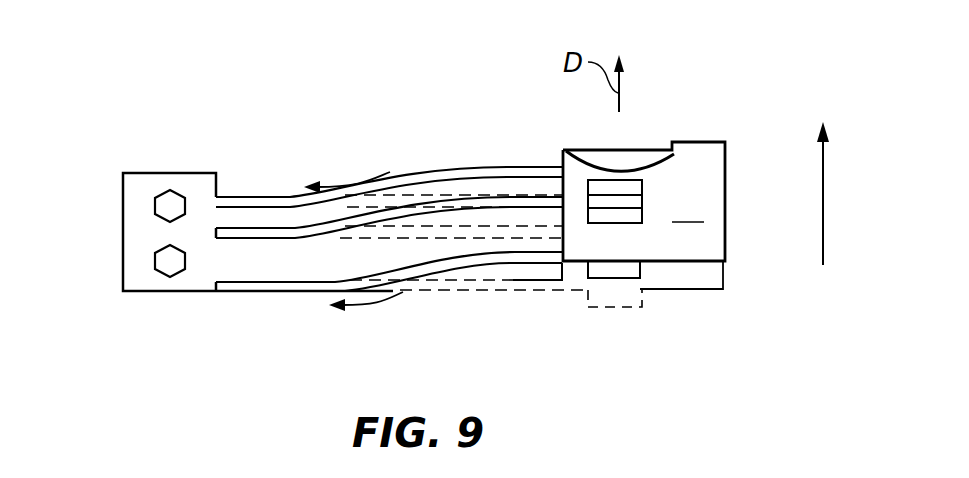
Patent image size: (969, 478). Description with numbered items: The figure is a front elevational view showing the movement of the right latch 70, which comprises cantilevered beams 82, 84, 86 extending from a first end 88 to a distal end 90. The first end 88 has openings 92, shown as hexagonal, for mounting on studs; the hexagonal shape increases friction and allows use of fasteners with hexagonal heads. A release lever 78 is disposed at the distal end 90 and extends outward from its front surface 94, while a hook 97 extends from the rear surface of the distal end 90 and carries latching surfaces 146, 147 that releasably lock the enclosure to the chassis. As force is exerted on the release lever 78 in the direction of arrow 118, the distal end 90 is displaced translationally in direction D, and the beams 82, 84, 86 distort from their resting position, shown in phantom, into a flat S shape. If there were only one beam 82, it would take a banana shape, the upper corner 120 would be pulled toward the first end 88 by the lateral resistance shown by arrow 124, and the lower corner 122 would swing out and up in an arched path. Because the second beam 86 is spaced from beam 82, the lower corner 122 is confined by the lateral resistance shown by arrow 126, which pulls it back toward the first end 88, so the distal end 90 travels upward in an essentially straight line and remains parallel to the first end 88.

The right latch 70 is at (163, 174).
The first end 88 is at (123, 198).
The openings 92 is at (156, 262).
The beam 82 is at (263, 193).
The beam 84 is at (415, 210).
The beam 86 is at (440, 268).
The arrow 124 is at (352, 183).
The arrow 126 is at (378, 300).
The distal end 90 is at (727, 212).
The release lever 78 is at (697, 155).
The upper corner 120 is at (562, 148).
The latching surface 147 is at (617, 190).
The front surface 94 is at (688, 209).
The hook 97 is at (642, 265).
The latching surface 146 is at (602, 268).
The lower corner 122 is at (727, 262).
The arrow 118 is at (857, 193).